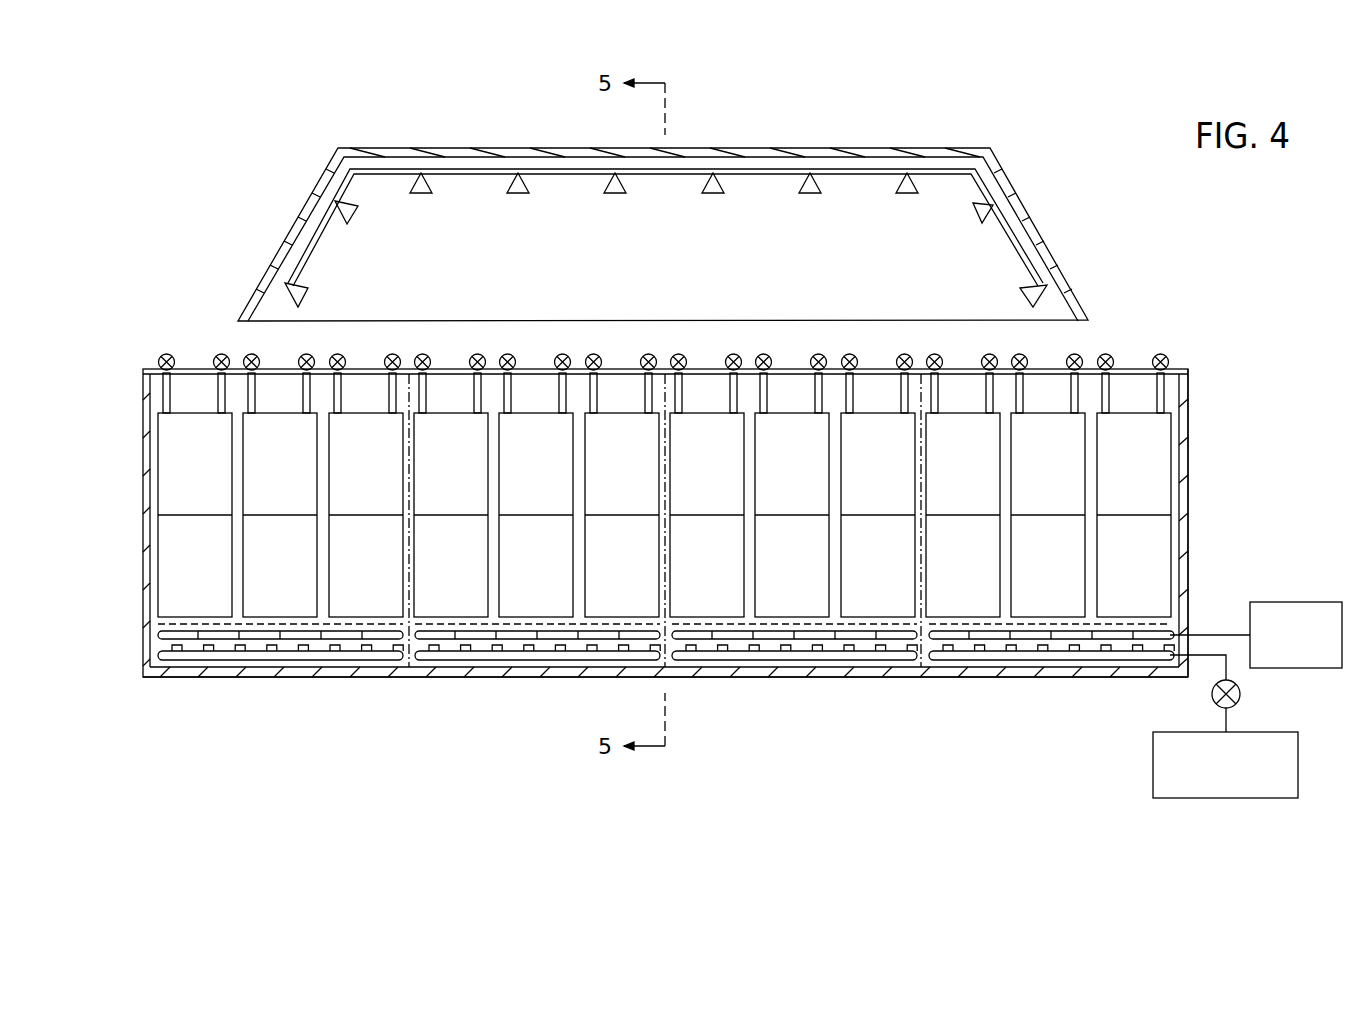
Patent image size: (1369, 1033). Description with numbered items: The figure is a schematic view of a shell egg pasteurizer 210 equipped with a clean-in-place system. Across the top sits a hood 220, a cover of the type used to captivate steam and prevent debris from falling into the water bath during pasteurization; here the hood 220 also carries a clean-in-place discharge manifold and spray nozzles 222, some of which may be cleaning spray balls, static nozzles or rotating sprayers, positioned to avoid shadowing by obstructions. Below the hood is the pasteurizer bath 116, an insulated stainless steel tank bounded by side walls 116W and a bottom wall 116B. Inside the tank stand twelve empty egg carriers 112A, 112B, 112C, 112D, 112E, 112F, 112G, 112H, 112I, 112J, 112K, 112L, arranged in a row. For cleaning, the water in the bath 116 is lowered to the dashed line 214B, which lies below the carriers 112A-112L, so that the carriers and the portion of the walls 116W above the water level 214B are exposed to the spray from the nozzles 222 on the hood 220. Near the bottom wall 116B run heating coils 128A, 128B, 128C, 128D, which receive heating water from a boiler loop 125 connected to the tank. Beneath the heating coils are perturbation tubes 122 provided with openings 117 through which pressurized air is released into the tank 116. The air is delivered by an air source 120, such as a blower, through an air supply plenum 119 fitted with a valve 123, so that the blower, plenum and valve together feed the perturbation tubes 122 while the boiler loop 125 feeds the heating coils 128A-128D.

The shell egg pasteurizer 210 is at (815, 125).
The hood 220 is at (415, 148).
The spray nozzles 222 is at (518, 182).
The pasteurizer bath 116 is at (143, 455).
The walls 116W is at (1187, 425).
The bottom wall 116B is at (160, 678).
The empty egg carrier 112A is at (200, 432).
The empty egg carrier 112B is at (285, 432).
The empty egg carrier 112C is at (371, 432).
The empty egg carrier 112D is at (456, 432).
The empty egg carrier 112E is at (541, 432).
The empty egg carrier 112F is at (627, 432).
The empty egg carrier 112G is at (712, 432).
The empty egg carrier 112H is at (797, 432).
The empty egg carrier 112I is at (883, 432).
The empty egg carrier 112J is at (968, 432).
The empty egg carrier 112K is at (1053, 432).
The empty egg carrier 112L is at (1139, 432).
The heating coil 128A is at (960, 639).
The heating coil 128B is at (860, 639).
The heating coil 128C is at (590, 639).
The heating coil 128D is at (318, 639).
The perturbation tubes 122 is at (375, 660).
The openings 117 is at (177, 652).
The water level 214B is at (1170, 637).
The boiler loop 125 is at (1295, 602).
The valve 123 is at (1240, 694).
The air supply plenum 119 is at (1228, 720).
The air source 120 is at (1153, 785).